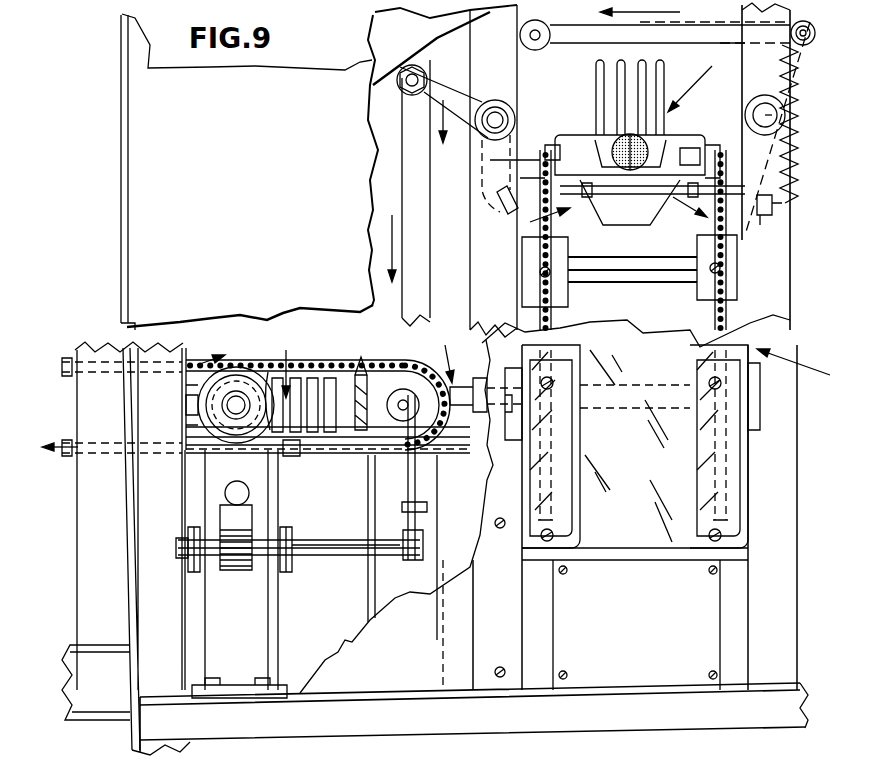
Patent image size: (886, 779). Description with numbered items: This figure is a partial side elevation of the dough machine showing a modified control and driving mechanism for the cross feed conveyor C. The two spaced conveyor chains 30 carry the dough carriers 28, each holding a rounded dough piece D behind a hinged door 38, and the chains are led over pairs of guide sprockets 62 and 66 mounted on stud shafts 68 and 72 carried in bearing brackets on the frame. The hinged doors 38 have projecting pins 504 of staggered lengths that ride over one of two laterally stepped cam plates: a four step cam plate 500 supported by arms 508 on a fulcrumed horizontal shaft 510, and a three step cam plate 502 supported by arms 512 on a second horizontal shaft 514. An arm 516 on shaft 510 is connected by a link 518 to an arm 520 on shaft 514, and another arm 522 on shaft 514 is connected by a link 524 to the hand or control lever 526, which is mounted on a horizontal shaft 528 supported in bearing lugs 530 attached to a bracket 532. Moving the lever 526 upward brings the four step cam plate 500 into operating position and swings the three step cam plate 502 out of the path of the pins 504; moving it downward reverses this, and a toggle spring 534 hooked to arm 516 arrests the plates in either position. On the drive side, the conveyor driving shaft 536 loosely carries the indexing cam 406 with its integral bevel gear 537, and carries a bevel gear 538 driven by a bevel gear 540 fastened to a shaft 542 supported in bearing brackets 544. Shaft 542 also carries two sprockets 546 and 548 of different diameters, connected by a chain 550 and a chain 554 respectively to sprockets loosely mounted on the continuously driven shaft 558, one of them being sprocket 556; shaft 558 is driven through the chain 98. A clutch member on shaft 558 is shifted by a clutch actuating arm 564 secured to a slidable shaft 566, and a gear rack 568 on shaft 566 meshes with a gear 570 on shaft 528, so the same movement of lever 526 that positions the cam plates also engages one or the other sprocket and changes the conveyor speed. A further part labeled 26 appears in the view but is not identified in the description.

The guide rods 26 is at (642, 62).
The dough carriers 28 is at (701, 80).
The conveyor chains 30 is at (727, 152).
The hinged doors 38 is at (660, 163).
The intermediate or guide sprockets 62 is at (578, 413).
The intermediate or guide sprockets 66 is at (569, 291).
The stud shaft 68 is at (662, 385).
The stud shaft 72 is at (661, 272).
The chain 98 is at (200, 358).
The cam 406 is at (302, 447).
The four step cam plate 500 is at (660, 196).
The three step cam plate 502 is at (530, 222).
The pins 504 is at (595, 200).
The arms 508 is at (762, 218).
The horizontal shaft 510 is at (786, 116).
The arms 512 is at (483, 180).
The horizontal shaft 514 is at (493, 112).
The arm 516 is at (812, 30).
The link 518 is at (722, 27).
The arm 520 is at (547, 48).
The arm 522 is at (440, 88).
The link 524 is at (478, 312).
The hand or control lever 526 is at (405, 493).
The horizontal shaft 528 is at (358, 549).
The bearing lugs 530 is at (192, 532).
The bracket 532 is at (188, 449).
The toggle spring 534 is at (800, 90).
The shaft 536 is at (186, 390).
The bevel gear 537 is at (288, 456).
The bevel gear 538 is at (398, 395).
The bevel gear 540 is at (331, 377).
The shaft 542 is at (400, 452).
The bearing brackets 544 is at (408, 472).
The sprocket 546 is at (355, 366).
The sprocket 548 is at (400, 456).
The chain 550 is at (270, 380).
The chain 554 is at (257, 362).
The sprocket 556 is at (238, 362).
The shaft 558 is at (235, 404).
The clutch actuating arm 564 is at (186, 403).
The shaft 566 is at (237, 493).
The gear rack 568 is at (252, 520).
The gear 570 is at (237, 562).
The cross feed conveyor C is at (803, 374).
The dough pieces D is at (630, 179).